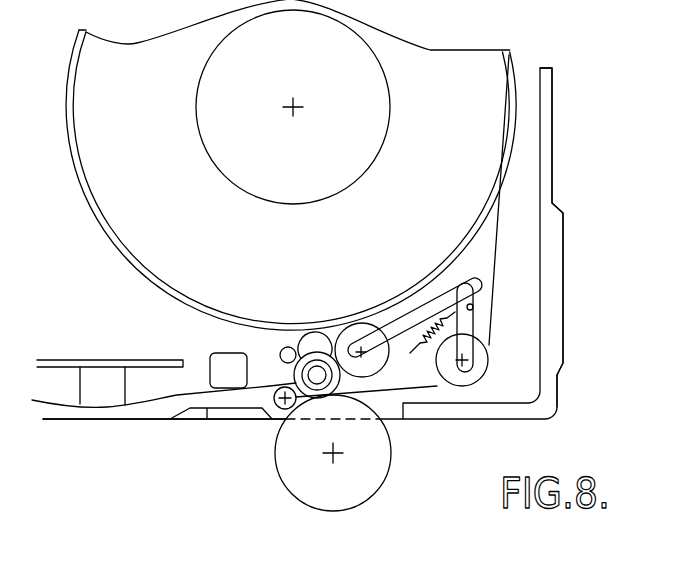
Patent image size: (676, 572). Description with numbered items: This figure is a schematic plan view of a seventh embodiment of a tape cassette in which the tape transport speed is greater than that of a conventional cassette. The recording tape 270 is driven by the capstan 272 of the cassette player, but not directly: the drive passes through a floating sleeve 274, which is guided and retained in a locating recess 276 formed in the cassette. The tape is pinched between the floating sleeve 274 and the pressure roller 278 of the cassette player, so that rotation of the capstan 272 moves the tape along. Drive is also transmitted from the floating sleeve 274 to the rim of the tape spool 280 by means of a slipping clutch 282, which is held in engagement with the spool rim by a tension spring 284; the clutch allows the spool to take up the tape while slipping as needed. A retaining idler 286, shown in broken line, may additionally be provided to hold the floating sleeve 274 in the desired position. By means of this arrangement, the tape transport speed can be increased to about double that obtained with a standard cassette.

The recording tape 270 is at (132, 405).
The capstan 272 is at (315, 377).
The floating sleeve 274 is at (268, 390).
The locating recess 276 is at (318, 343).
The pressure roller 278 is at (303, 477).
The tape spool 280 is at (512, 168).
The slipping clutch 282 is at (365, 326).
The tension spring 284 is at (425, 340).
The retaining idler 286 is at (280, 352).